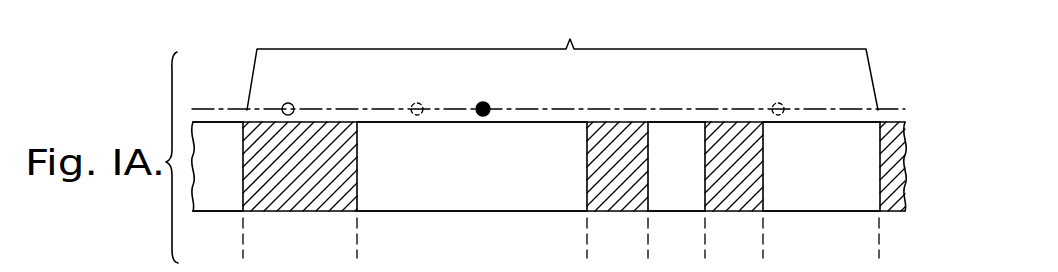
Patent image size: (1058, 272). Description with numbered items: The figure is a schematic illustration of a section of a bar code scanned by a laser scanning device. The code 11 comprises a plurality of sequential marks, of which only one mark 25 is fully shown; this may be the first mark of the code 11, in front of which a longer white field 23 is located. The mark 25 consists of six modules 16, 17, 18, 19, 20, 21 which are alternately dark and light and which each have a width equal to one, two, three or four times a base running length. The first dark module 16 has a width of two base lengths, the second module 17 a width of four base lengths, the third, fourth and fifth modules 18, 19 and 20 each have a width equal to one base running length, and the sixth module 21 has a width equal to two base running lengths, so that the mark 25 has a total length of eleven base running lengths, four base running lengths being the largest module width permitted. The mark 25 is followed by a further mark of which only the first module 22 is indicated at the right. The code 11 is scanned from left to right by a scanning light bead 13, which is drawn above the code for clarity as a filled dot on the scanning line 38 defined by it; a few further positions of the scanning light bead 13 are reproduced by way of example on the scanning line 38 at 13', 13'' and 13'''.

The code 11 is at (193, 212).
The white field 23 is at (224, 200).
The first dark module 16 is at (314, 201).
The second module 17 is at (477, 201).
The third module 18 is at (612, 203).
The fourth module 19 is at (672, 201).
The fifth module 20 is at (723, 203).
The sixth module 21 is at (814, 200).
The first module of further mark 22 is at (897, 210).
The mark 25 is at (562, 59).
The scanning line 38 is at (651, 108).
The scanning light bead 13 is at (496, 90).
The scanning light bead position 13' is at (301, 90).
The scanning light bead position 13'' is at (434, 90).
The scanning light bead position 13''' is at (796, 90).